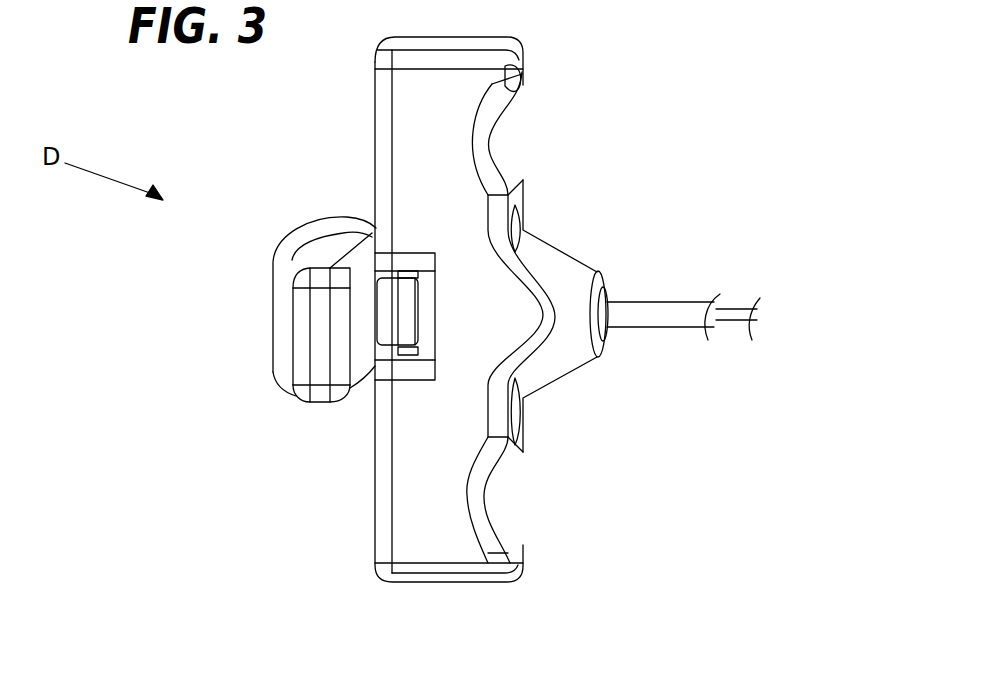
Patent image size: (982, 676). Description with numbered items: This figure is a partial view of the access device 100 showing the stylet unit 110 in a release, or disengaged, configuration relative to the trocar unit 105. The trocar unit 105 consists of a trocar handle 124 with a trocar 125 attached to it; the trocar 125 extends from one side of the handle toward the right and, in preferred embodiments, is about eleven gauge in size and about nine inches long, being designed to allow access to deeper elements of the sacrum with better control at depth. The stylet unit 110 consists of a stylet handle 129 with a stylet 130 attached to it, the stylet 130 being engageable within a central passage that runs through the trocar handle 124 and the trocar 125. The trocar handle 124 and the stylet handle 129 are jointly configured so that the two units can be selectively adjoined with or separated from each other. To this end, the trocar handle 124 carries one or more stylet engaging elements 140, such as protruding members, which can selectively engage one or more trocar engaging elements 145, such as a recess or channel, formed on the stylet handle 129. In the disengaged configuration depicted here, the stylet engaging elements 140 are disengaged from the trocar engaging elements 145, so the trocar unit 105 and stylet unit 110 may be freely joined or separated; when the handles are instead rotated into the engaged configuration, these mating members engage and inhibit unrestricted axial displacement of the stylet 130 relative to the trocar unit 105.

The access device 100 is at (697, 148).
The trocar unit 105 is at (515, 545).
The stylet unit 110 is at (272, 320).
The trocar handle 124 is at (378, 82).
The trocar 125 is at (647, 312).
The stylet handle 129 is at (277, 375).
The stylet 130 is at (733, 312).
The stylet engaging elements 140 is at (412, 273).
The trocar engaging elements 145 is at (410, 318).